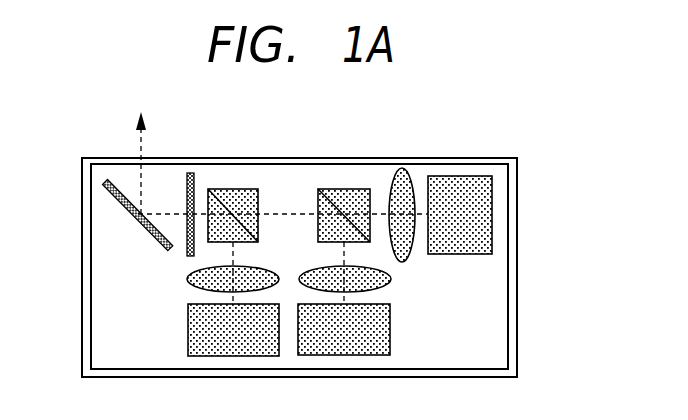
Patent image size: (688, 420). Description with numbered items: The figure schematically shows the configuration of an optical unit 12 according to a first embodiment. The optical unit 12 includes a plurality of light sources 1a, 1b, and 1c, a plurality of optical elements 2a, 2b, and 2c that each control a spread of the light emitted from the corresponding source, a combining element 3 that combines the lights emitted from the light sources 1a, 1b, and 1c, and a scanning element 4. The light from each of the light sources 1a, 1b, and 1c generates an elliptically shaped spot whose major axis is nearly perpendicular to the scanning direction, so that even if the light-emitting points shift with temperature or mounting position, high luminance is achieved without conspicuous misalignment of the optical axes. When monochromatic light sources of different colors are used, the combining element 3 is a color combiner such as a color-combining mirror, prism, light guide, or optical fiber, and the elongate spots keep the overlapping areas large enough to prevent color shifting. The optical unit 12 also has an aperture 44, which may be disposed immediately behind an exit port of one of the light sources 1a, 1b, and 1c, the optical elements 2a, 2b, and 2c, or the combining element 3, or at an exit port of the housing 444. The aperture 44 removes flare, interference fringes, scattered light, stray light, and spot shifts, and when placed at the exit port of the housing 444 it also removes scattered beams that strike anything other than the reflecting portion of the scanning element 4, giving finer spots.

The light source 1a is at (463, 176).
The light source 1b is at (390, 330).
The light source 1c is at (188, 333).
The optical element 2a is at (400, 168).
The optical element 2b is at (391, 279).
The optical element 2c is at (187, 283).
The combining element 3 is at (233, 189).
The scanning element 4 is at (127, 208).
The aperture 44 is at (190, 173).
The housing 444 is at (508, 224).
The optical unit 12 is at (517, 358).